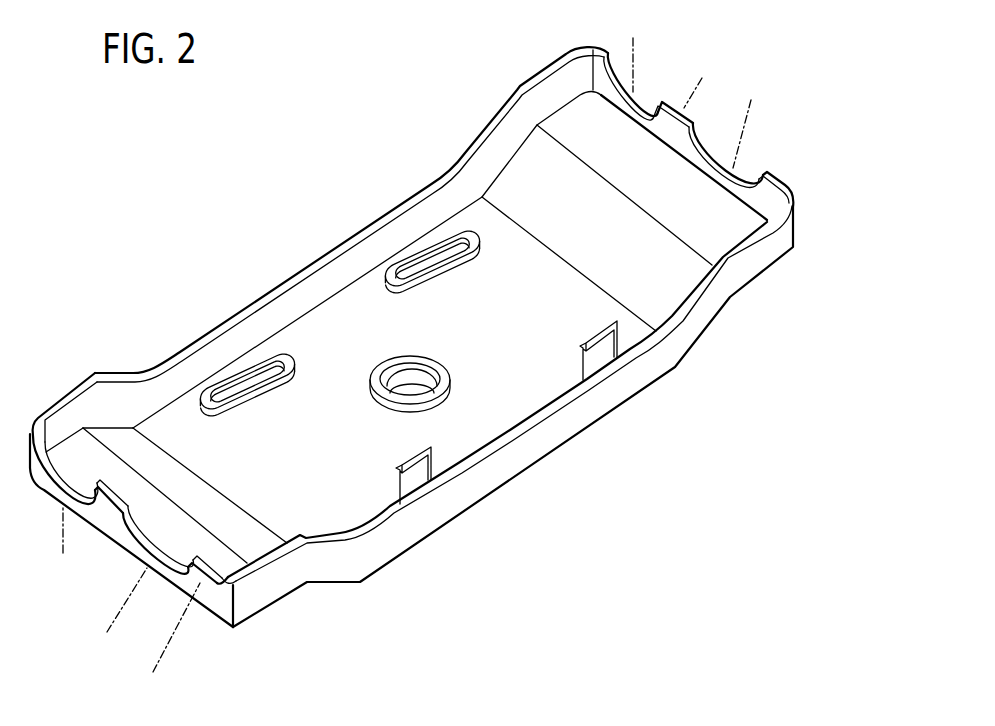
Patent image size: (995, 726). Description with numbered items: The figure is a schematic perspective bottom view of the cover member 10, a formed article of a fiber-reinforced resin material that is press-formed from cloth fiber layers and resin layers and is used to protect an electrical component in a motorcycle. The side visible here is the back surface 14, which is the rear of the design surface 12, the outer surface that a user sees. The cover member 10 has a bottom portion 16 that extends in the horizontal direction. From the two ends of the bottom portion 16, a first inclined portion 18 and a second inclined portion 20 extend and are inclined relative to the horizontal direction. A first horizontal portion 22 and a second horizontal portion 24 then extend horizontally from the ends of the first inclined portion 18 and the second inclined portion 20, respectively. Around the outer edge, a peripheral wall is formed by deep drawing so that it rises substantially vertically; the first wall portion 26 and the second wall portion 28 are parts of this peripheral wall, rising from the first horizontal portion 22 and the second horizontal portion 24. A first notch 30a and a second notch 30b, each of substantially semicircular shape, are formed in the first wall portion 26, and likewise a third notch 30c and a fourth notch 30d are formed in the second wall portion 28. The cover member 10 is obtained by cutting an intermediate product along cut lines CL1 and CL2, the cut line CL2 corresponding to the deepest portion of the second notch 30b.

The cover member 10 is at (137, 119).
The design surface 12 is at (637, 394).
The back surface 14 is at (345, 314).
The bottom portion 16 is at (510, 400).
The first inclined portion 18 is at (131, 446).
The second inclined portion 20 is at (525, 171).
The first horizontal portion 22 is at (72, 455).
The second horizontal portion 24 is at (707, 192).
The first wall portion 26 is at (208, 590).
The second wall portion 28 is at (682, 101).
The first notch 30a is at (163, 567).
The second notch 30b is at (52, 489).
The third notch 30c is at (734, 167).
The fourth notch 30d is at (640, 102).
The cut line CL1 is at (430, 375).
The cut line CL2 is at (414, 334).